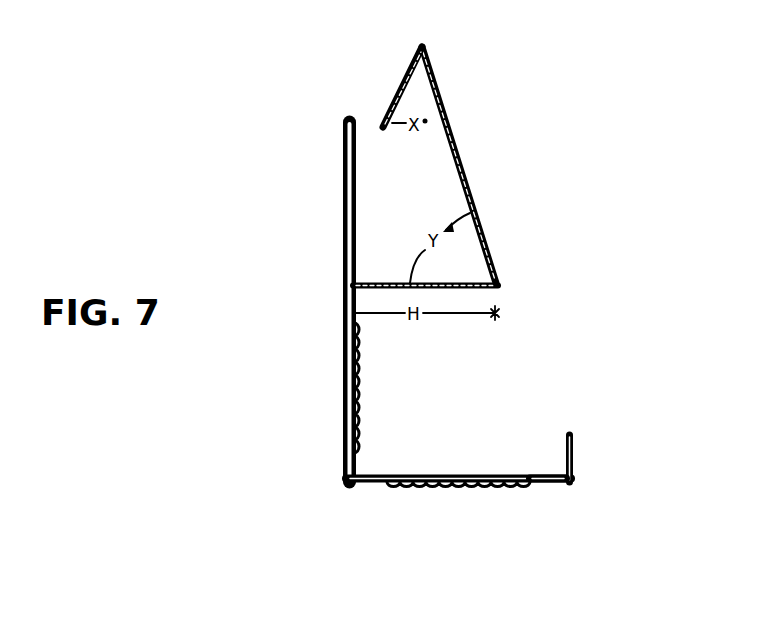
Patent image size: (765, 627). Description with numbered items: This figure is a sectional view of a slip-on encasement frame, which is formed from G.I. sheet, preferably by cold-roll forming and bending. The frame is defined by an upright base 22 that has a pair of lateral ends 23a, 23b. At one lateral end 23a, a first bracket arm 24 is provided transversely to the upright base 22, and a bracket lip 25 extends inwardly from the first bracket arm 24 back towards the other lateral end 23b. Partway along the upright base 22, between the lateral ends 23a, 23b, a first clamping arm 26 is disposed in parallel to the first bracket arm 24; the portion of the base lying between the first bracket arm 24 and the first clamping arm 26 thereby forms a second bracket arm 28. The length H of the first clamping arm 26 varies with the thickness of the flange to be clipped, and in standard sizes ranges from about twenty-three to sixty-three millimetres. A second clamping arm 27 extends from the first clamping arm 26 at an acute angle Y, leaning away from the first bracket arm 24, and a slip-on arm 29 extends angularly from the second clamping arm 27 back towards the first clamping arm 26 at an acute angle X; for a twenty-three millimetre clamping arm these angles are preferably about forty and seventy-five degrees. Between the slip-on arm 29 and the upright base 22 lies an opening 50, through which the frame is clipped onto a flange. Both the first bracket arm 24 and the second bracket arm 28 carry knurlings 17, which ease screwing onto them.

The knurlings 17 is at (340, 380).
The upright base 22 is at (343, 300).
The lateral end 23a is at (343, 485).
The lateral end 23b is at (338, 125).
The first bracket arm 24 is at (550, 478).
The bracket lip 25 is at (574, 452).
The first clamping arm 26 is at (500, 285).
The second clamping arm 27 is at (470, 172).
The second bracket arm 28 is at (343, 457).
The slip-on arm 29 is at (406, 75).
The opening 50 is at (372, 123).